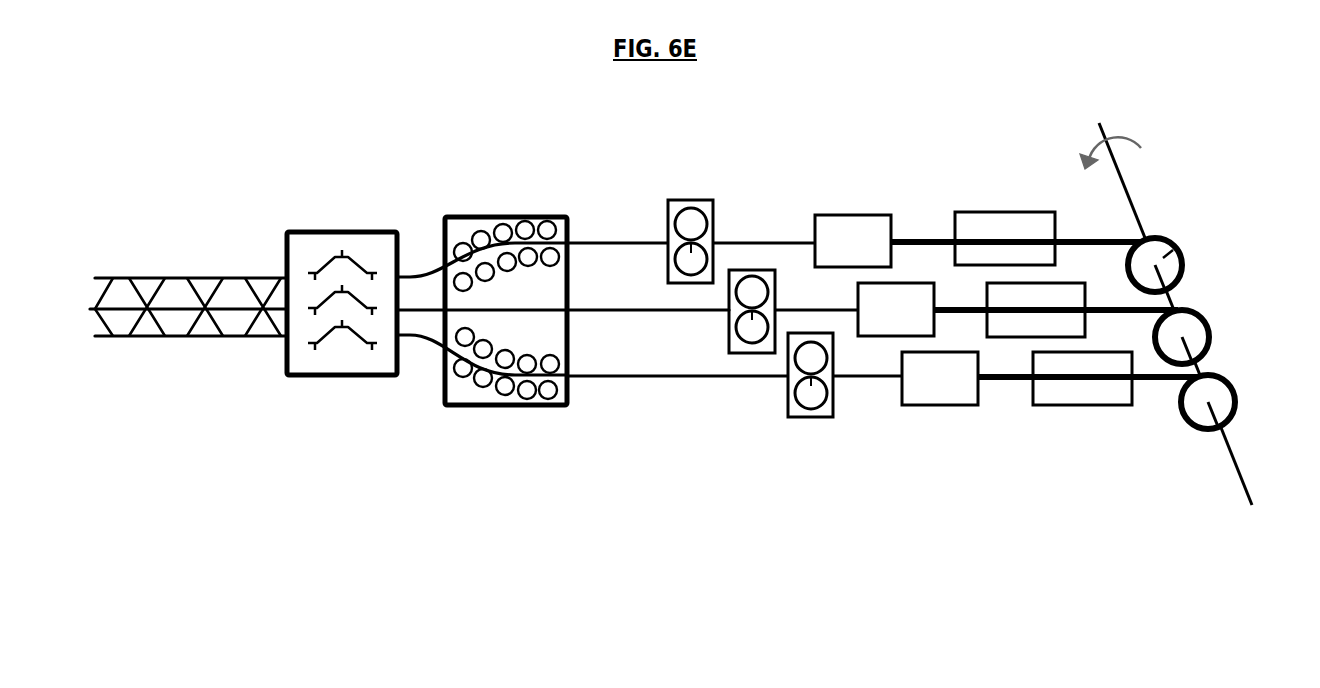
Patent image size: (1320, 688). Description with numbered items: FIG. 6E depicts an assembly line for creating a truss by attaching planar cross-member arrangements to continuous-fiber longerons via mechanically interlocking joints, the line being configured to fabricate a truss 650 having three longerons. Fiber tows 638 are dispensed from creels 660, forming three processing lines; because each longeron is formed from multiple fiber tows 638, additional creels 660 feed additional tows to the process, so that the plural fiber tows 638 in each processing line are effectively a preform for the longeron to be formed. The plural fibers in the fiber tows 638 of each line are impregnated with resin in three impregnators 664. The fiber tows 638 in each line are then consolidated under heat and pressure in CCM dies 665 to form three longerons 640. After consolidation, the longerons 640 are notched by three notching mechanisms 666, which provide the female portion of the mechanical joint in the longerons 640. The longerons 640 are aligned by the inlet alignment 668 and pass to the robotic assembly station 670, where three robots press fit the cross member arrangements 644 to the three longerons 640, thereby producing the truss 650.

The truss 650 is at (208, 337).
The cross member arrangements 644 is at (342, 325).
The robotic assembly station 670 is at (353, 232).
The inlet alignment 668 is at (483, 407).
The longerons 640 is at (767, 240).
The notching mechanisms 666 is at (810, 418).
The CCM dies 665 is at (944, 407).
The fiber tows 638 is at (1073, 235).
The impregnators 664 is at (995, 210).
The creels 660 is at (1178, 233).